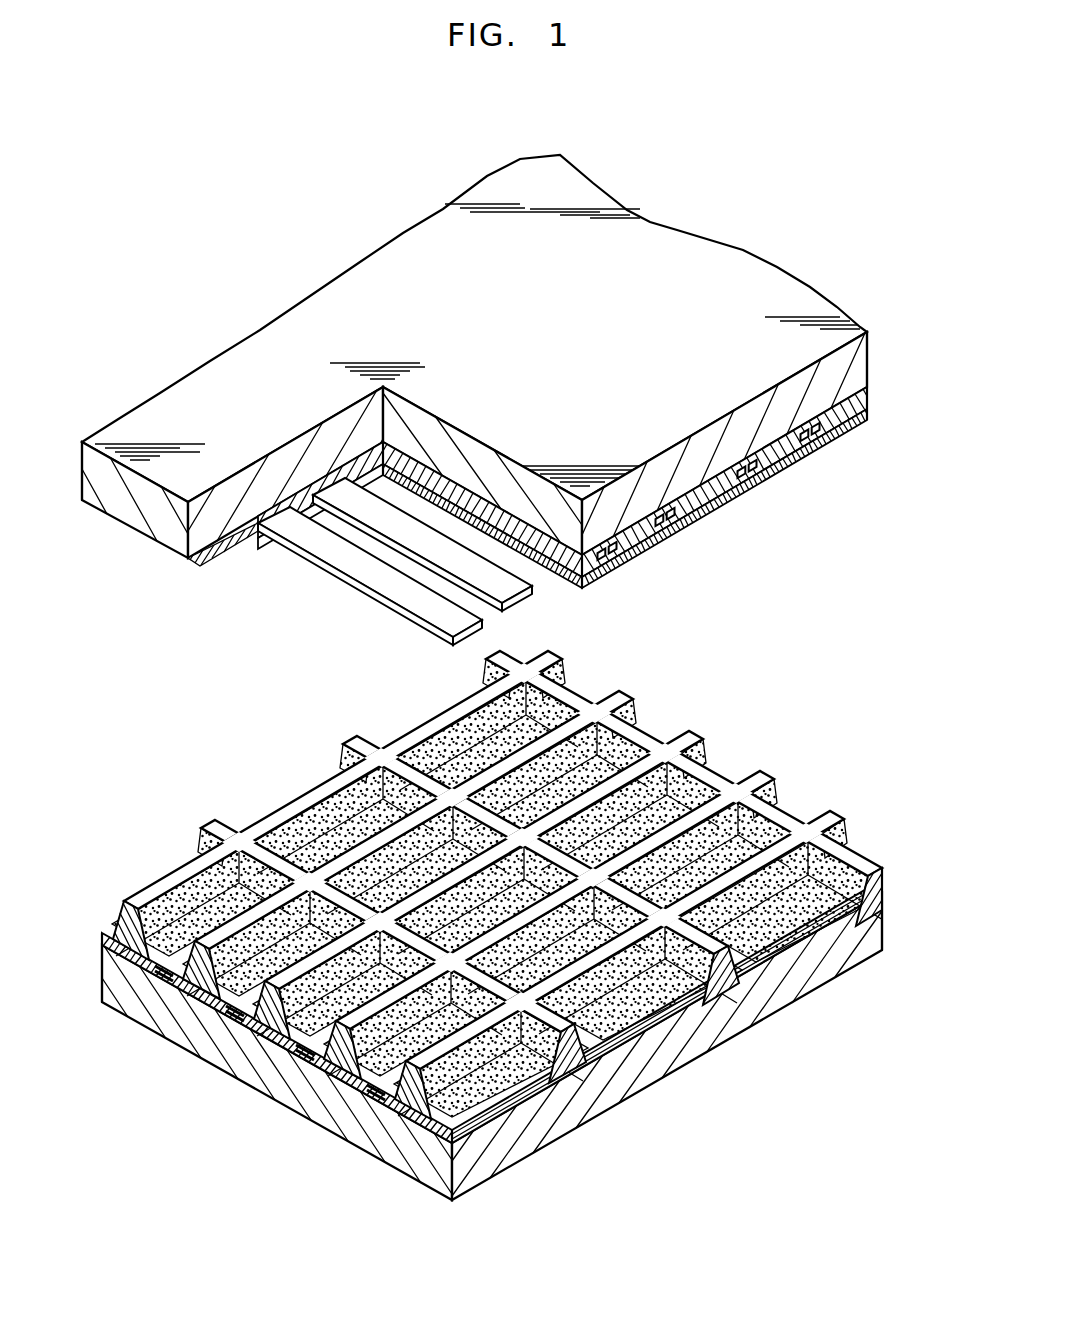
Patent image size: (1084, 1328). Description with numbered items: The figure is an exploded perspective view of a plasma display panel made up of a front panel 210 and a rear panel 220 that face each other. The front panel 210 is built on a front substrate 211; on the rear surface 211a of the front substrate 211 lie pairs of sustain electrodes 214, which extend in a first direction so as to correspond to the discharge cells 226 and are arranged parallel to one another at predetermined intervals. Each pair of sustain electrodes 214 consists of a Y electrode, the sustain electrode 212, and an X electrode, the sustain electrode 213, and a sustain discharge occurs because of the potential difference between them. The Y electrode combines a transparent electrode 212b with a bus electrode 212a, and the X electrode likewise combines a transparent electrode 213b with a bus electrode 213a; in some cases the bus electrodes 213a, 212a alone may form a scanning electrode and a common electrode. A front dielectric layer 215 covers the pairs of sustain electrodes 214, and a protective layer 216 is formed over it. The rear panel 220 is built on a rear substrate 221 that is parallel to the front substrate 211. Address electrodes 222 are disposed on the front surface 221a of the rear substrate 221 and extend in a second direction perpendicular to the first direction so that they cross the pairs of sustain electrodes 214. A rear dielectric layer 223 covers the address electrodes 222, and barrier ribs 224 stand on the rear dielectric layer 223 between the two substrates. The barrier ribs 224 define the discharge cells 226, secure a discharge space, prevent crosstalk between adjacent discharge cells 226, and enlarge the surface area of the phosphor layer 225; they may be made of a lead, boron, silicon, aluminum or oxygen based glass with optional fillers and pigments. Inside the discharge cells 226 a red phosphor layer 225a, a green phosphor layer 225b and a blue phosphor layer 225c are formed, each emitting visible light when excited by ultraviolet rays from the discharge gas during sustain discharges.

The front panel 210 is at (218, 327).
The front substrate 211 is at (866, 364).
The inner surface of front substrate 211a is at (718, 462).
The sustain electrode 212 is at (488, 570).
The bus electrode 212a is at (606, 580).
The transparent electrode 212b is at (628, 560).
The sustain electrode 213 is at (709, 517).
The bus electrode 213a is at (698, 528).
The transparent electrode 213b is at (676, 541).
The pair of sustain electrodes 214 is at (539, 548).
The front dielectric layer 215 is at (866, 402).
The protective layer 216 is at (828, 444).
The rear panel 220 is at (217, 772).
The rear substrate 221 is at (738, 1040).
The front surface of the rear substrate 221a is at (440, 1135).
The address electrode 222 is at (270, 1076).
The rear dielectric layer 223 is at (270, 1059).
The barrier rib 224 is at (492, 1011).
The phosphor layer 225 is at (486, 946).
The red phosphor layer 225a is at (495, 1087).
The green phosphor layer 225b is at (628, 1060).
The blue phosphor layer 225c is at (787, 917).
The discharge cell 226 is at (770, 834).